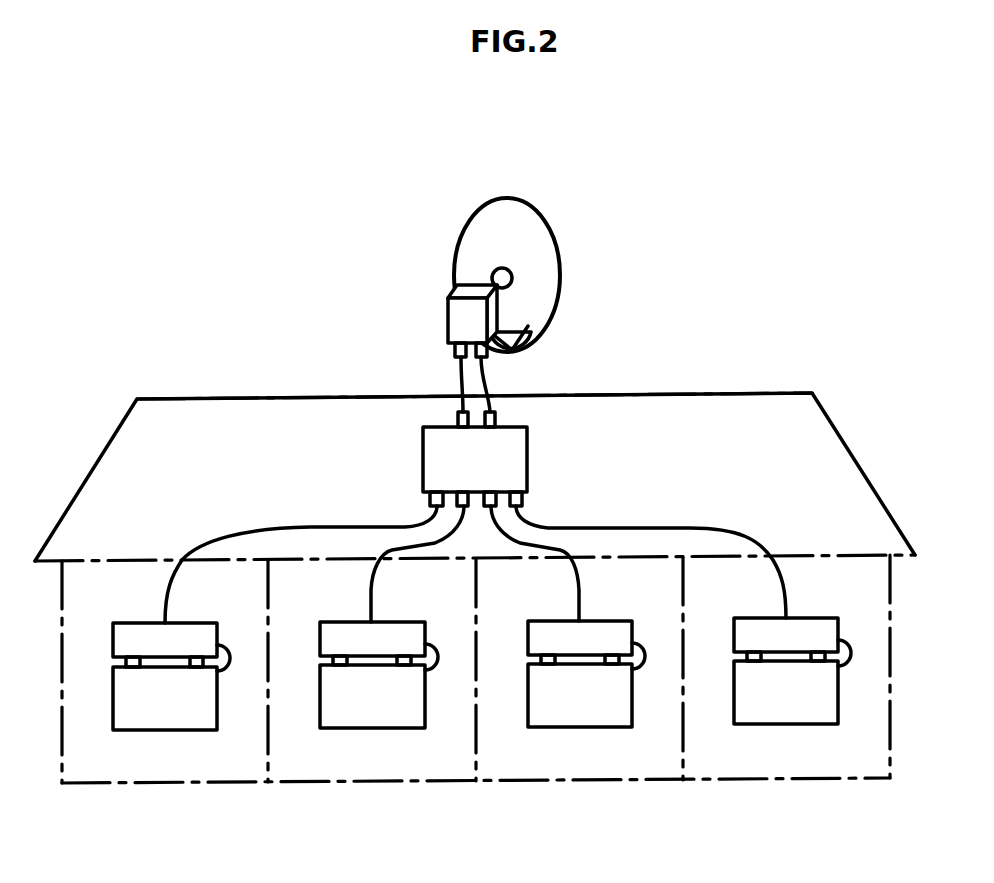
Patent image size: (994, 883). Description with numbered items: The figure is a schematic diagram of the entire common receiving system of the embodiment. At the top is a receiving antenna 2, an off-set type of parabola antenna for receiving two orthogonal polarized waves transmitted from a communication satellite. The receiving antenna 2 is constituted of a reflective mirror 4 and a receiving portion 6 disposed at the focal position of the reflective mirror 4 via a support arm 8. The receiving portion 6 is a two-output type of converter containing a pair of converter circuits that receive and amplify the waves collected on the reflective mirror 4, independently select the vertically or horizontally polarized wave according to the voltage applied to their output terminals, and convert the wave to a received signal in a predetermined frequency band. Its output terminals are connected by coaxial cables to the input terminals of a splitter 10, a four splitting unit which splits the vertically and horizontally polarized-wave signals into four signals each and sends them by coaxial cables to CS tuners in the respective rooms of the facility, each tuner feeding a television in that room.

The receiving antenna 2 is at (562, 268).
The reflective mirror 4 is at (549, 238).
The receiving portion 6 is at (460, 317).
The support arm 8 is at (527, 337).
The splitter 10 is at (510, 463).